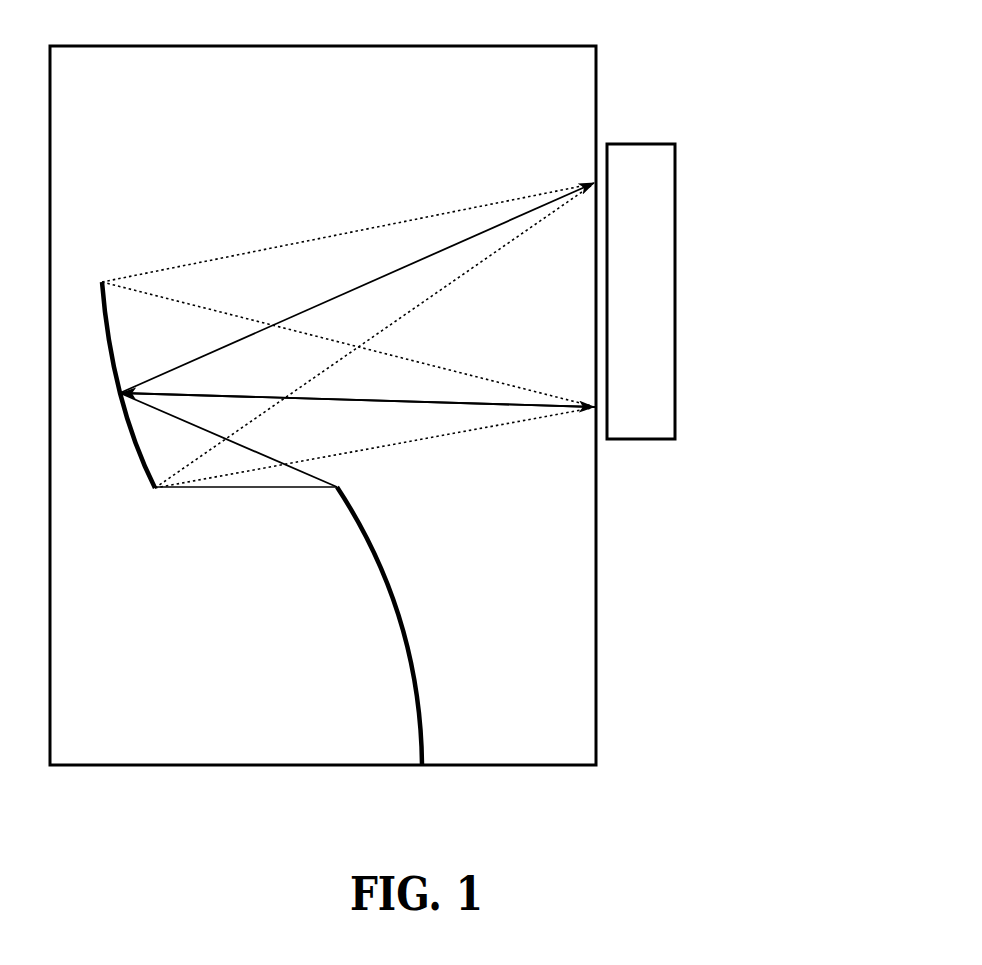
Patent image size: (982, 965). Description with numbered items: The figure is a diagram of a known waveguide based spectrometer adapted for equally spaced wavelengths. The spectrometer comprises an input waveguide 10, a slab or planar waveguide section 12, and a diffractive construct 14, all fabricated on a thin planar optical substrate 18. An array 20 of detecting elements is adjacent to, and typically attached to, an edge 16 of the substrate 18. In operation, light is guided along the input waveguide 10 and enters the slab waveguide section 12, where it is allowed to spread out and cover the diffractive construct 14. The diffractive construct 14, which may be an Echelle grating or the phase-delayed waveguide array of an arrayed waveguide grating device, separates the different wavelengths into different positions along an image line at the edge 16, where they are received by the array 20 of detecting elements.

The input waveguide 10 is at (400, 622).
The slab waveguide section 12 is at (245, 501).
The diffractive construct 14 is at (128, 436).
The edge 16 is at (596, 82).
The planar optical substrate 18 is at (562, 697).
The array of detecting elements 20 is at (675, 293).